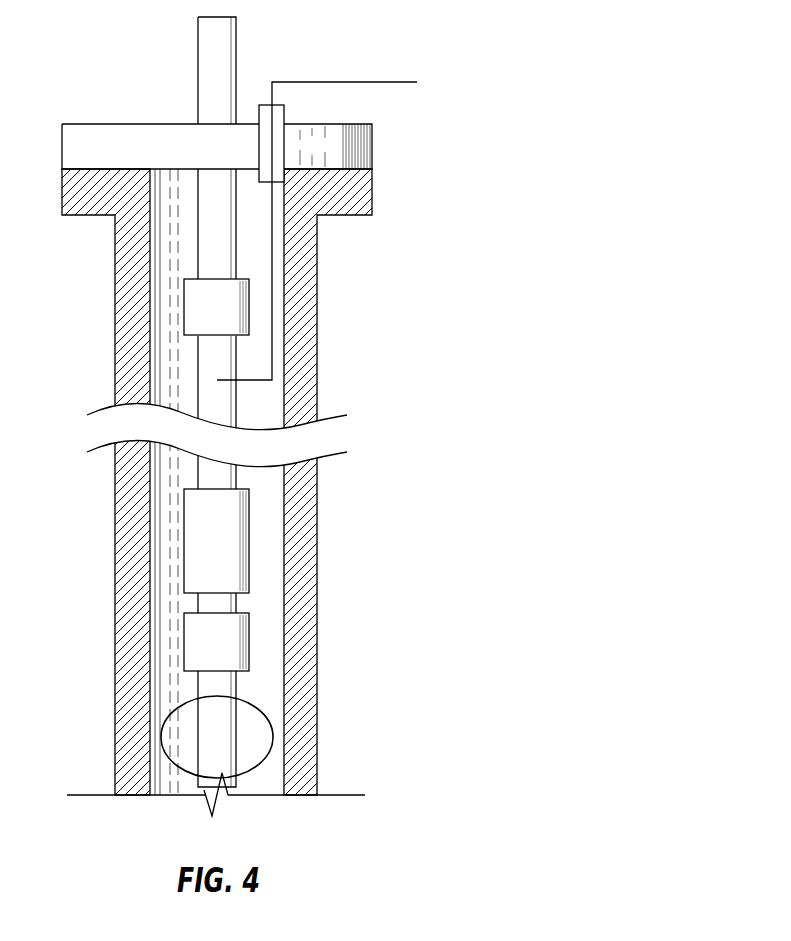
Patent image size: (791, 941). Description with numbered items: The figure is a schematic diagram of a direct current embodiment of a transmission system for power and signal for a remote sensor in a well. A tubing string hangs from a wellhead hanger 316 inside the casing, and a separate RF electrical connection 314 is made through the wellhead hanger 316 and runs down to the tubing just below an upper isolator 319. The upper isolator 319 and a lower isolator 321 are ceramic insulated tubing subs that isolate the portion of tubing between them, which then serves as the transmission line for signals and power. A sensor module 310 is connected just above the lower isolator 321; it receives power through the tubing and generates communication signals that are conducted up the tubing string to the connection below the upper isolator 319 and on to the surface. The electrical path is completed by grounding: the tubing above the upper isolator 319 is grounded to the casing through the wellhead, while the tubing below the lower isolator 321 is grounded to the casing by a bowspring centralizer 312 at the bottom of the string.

The sensor module 310 is at (237, 556).
The bowspring centralizer 312 is at (178, 706).
The RF electrical connection 314 is at (357, 82).
The wellhead hanger 316 is at (367, 147).
The upper isolator 319 is at (237, 320).
The lower isolator 321 is at (237, 655).